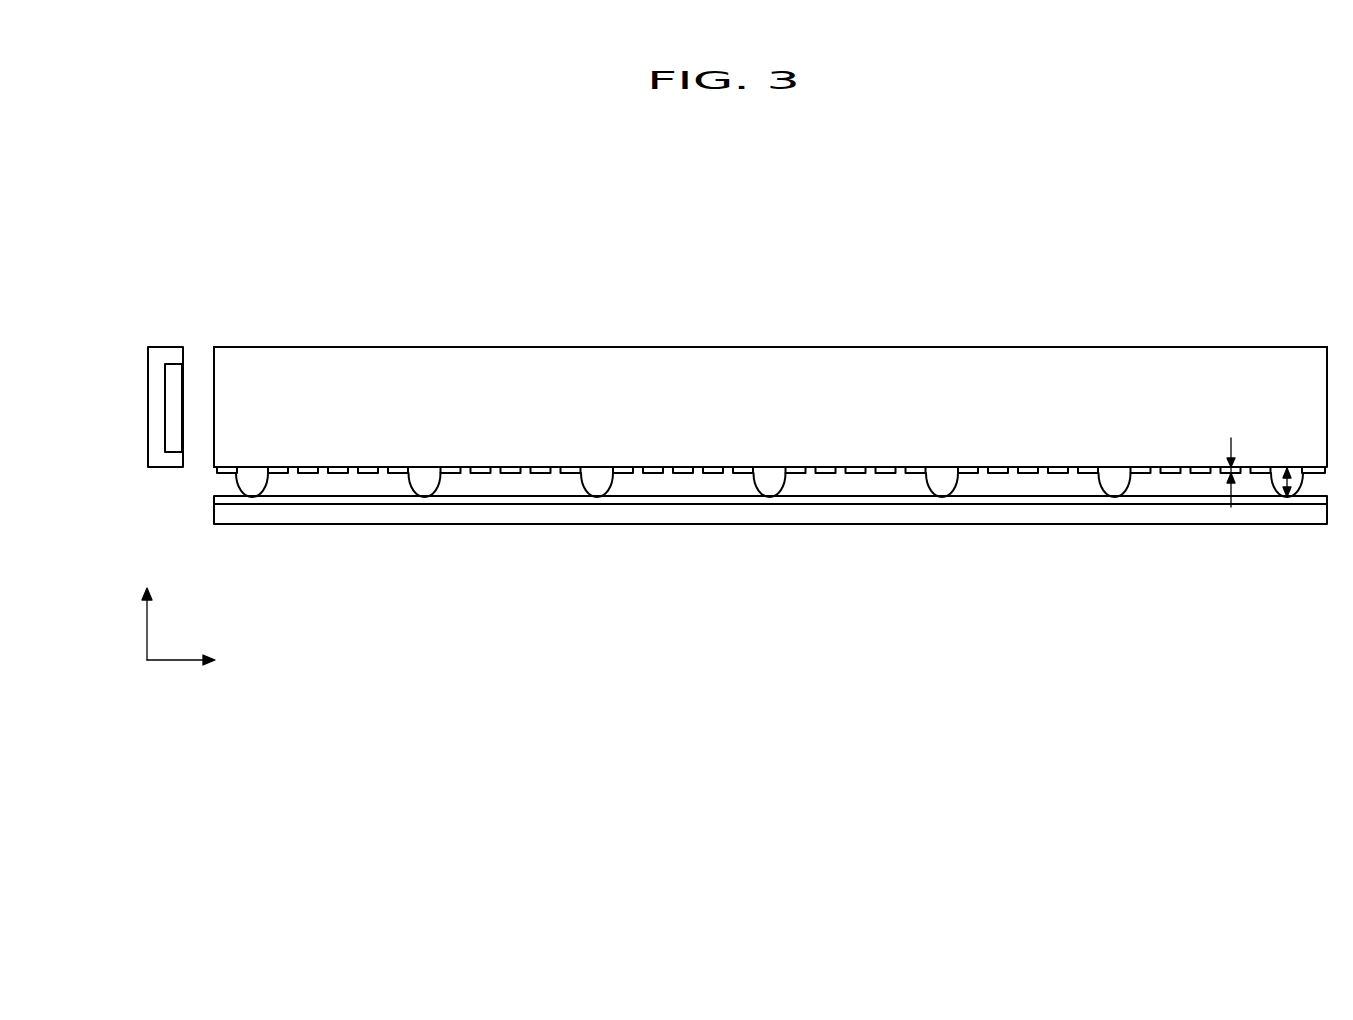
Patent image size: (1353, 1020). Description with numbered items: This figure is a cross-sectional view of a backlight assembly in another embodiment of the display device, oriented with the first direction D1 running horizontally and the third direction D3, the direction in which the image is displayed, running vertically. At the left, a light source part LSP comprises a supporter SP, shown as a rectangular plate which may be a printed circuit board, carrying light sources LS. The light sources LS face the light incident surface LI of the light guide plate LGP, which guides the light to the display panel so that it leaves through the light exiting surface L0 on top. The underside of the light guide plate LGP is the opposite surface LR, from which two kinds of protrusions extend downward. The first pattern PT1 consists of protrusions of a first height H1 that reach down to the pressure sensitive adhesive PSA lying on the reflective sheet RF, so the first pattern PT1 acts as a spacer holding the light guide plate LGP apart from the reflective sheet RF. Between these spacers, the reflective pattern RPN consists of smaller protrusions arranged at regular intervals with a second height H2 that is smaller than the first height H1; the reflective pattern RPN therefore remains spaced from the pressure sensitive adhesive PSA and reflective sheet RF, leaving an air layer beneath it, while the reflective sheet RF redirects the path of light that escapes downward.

The light guide plate LGP is at (1161, 325).
The light exiting surface L0 is at (647, 347).
The light incident surface LI is at (214, 408).
The light source part LSP is at (130, 369).
The supporter SP is at (155, 383).
The light sources LS is at (173, 424).
The reflective pattern RPN is at (514, 474).
The opposite surface LR is at (326, 470).
The first pattern PT1 is at (427, 488).
The pressure sensitive adhesive PSA is at (218, 500).
The reflective sheet RF is at (218, 512).
The first height H1 is at (1286, 468).
The second height H2 is at (1218, 471).
The first direction D1 is at (196, 663).
The third direction D3 is at (147, 610).